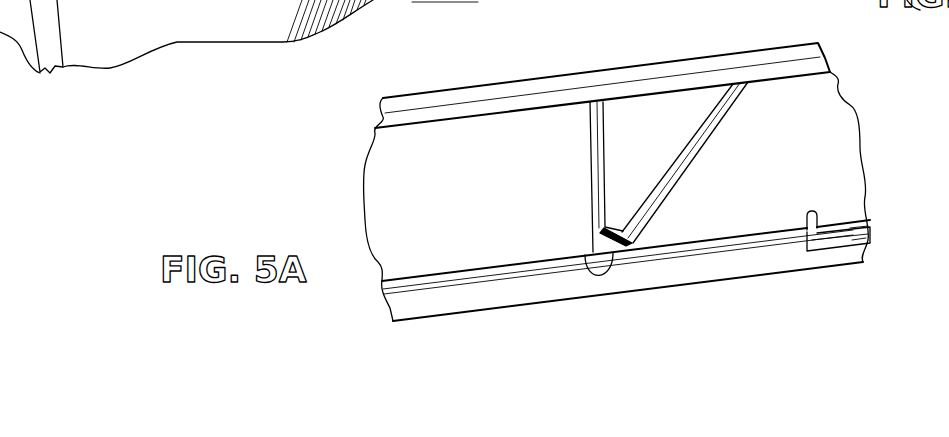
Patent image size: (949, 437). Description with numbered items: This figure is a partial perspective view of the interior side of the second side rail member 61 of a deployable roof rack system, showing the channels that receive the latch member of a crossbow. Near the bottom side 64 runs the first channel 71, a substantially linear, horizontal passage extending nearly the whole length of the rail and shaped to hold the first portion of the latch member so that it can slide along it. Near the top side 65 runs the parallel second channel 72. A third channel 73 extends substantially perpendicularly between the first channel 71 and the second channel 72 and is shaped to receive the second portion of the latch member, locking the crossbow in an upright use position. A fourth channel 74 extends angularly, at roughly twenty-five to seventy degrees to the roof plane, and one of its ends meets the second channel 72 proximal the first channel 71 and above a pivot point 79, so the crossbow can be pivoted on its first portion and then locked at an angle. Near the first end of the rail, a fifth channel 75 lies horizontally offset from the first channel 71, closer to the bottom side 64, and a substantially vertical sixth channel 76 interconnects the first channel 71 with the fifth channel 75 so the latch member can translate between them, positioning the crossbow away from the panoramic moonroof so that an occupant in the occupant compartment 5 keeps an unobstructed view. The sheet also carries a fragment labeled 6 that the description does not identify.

The occupant compartment 5 is at (130, 3).
The frame portion 6 is at (608, 0).
The second side rail member 61 is at (473, 90).
The bottom side 64 is at (752, 276).
The top side 65 is at (678, 70).
The first channel 71 is at (488, 278).
The second channel 72 is at (765, 85).
The third channel 73 is at (591, 150).
The fourth channel 74 is at (687, 163).
The fifth channel 75 is at (849, 247).
The sixth channel 76 is at (822, 222).
The pivot point 79 is at (601, 268).